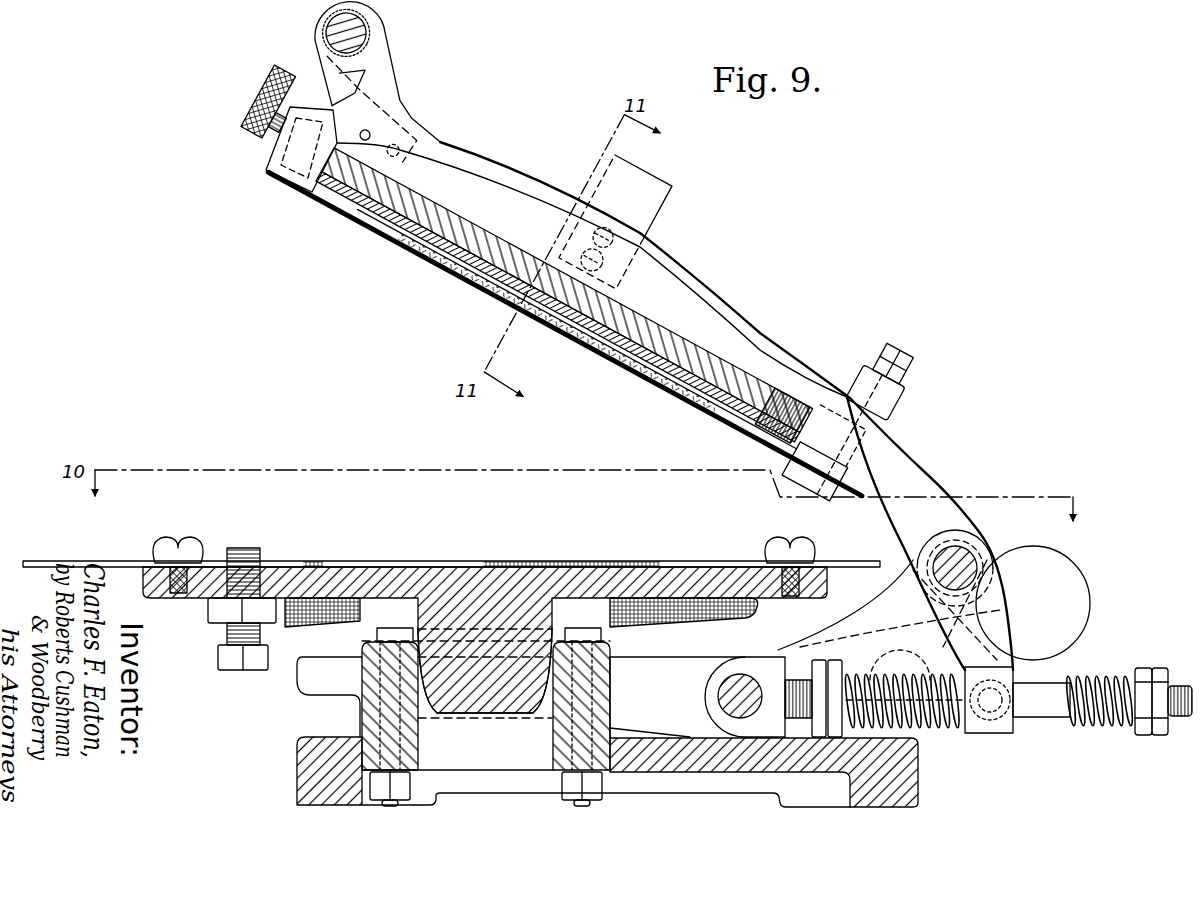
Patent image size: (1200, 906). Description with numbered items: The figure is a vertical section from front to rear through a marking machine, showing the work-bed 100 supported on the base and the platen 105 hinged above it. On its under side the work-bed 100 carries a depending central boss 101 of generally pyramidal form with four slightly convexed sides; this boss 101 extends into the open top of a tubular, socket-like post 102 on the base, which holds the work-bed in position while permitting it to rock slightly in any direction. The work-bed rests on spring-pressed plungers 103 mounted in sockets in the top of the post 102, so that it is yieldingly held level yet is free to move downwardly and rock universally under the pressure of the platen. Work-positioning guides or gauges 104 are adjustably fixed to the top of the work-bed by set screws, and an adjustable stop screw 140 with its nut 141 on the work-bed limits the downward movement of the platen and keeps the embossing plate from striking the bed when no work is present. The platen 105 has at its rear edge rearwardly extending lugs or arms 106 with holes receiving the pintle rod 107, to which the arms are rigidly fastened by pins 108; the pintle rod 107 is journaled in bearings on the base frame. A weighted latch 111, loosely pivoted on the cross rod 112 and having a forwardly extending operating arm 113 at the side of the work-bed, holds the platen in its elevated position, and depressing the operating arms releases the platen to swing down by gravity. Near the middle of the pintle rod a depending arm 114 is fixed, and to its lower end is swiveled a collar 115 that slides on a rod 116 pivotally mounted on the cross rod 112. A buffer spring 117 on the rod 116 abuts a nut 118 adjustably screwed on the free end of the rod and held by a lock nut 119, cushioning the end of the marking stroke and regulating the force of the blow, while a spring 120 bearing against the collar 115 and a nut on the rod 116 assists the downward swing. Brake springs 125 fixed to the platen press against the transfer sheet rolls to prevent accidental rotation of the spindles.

The work-bed 100 is at (287, 580).
The central boss 101 is at (493, 695).
The post 102 is at (360, 672).
The spring-pressed plungers 103 is at (375, 633).
The work-positioning guides 104 is at (113, 561).
The platen 105 is at (652, 336).
The lugs 106 is at (878, 468).
The pintle rod 107 is at (952, 548).
The pins 108 is at (989, 553).
The latch 111 is at (1073, 653).
The cross rod 112 is at (735, 676).
The operating arm 113 is at (640, 732).
The depending arm 114 is at (993, 618).
The collar 115 is at (1003, 734).
The rod 116 is at (1057, 708).
The buffer spring 117 is at (1113, 724).
The nut 118 is at (1141, 670).
The lock nut 119 is at (1160, 668).
The spring 120 is at (922, 727).
The brake springs 125 is at (248, 117).
The adjustable stop screw 140 is at (238, 550).
The nut 141 is at (222, 613).